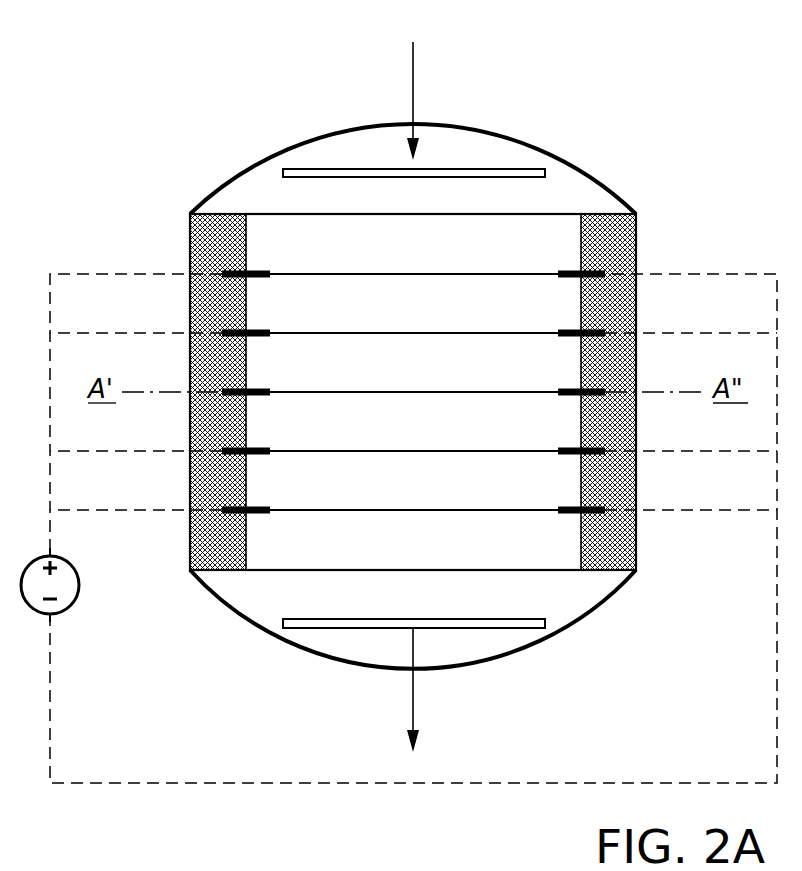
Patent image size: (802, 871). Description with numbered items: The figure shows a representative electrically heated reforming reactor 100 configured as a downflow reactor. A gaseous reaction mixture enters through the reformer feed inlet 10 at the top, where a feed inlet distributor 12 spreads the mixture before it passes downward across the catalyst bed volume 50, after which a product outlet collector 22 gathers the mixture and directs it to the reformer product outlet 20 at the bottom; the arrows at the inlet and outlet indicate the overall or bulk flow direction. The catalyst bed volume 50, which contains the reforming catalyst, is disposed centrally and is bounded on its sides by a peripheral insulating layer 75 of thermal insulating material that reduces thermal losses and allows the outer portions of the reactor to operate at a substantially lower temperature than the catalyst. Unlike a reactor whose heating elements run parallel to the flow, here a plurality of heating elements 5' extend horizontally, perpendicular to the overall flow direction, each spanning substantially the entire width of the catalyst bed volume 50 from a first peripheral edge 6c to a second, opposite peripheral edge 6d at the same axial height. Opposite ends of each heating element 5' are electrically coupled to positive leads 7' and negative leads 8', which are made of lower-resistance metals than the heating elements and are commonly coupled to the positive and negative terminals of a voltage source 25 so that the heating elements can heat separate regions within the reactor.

The reactor 100 is at (292, 90).
The reformer feed inlet 10 is at (415, 78).
The feed inlet distributor 12 is at (522, 177).
The product outlet collector 22 is at (310, 617).
The reformer product outlet 20 is at (411, 702).
The heating elements 5' is at (414, 413).
The positive leads 7' is at (262, 255).
The negative leads 8' is at (567, 255).
The first peripheral edge 6c is at (247, 366).
The second peripheral edge 6d is at (581, 366).
The catalyst bed volume 50 is at (325, 314).
The peripheral insulating layer 75 is at (626, 312).
The voltage source 25 is at (80, 582).